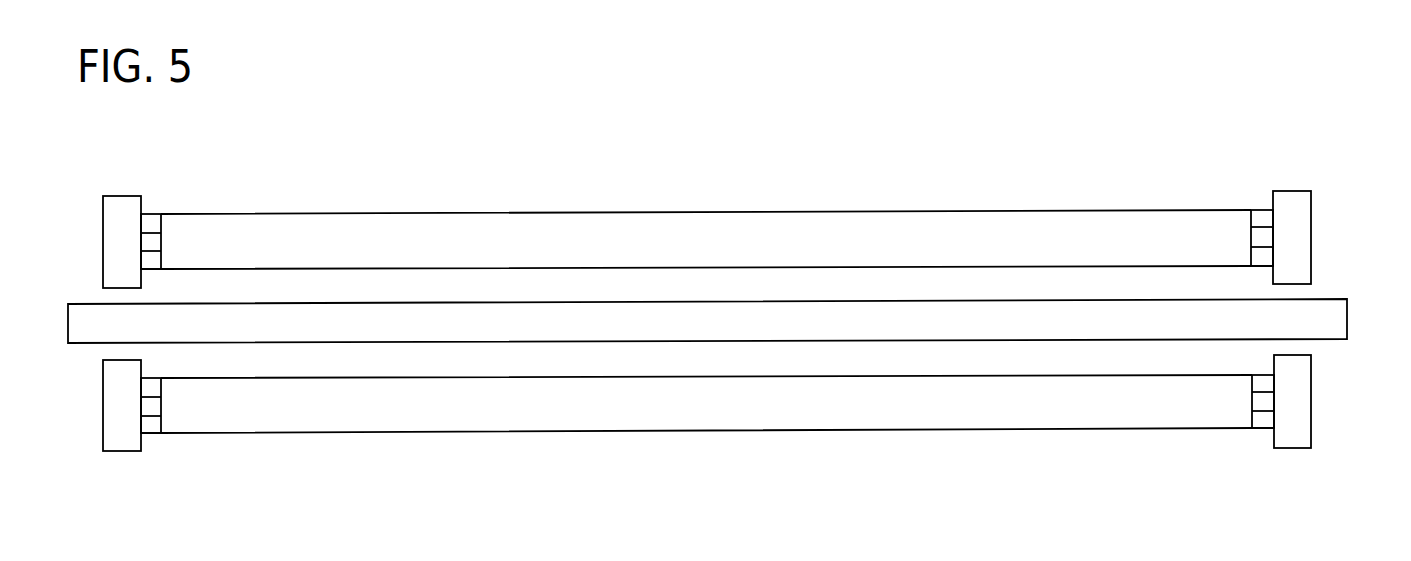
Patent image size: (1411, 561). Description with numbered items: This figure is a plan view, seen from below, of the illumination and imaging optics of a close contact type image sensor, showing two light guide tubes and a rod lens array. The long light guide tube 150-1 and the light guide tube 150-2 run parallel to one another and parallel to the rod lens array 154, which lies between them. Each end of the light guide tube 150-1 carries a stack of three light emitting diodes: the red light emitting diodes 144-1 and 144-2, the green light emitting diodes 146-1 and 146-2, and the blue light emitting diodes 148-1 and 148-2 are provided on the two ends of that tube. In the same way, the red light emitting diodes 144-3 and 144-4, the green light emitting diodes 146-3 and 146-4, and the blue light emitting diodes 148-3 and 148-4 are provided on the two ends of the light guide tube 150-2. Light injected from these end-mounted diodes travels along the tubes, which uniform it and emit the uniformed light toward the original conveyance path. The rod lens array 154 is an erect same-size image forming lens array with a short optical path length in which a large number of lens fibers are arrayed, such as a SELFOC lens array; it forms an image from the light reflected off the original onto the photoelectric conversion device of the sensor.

The red light emitting diode 144-1 is at (150, 223).
The red light emitting diode 144-2 is at (1260, 222).
The red light emitting diode 144-3 is at (150, 388).
The red light emitting diode 144-4 is at (1262, 382).
The green light emitting diode 146-1 is at (152, 240).
The green light emitting diode 146-2 is at (1258, 238).
The green light emitting diode 146-3 is at (157, 407).
The green light emitting diode 146-4 is at (1258, 405).
The blue light emitting diode 148-1 is at (150, 263).
The blue light emitting diode 148-2 is at (1258, 258).
The blue light emitting diode 148-3 is at (150, 425).
The blue light emitting diode 148-4 is at (1262, 422).
The light guide tube 150-1 is at (703, 225).
The light guide tube 150-2 is at (712, 415).
The rod lens array 154 is at (1320, 315).